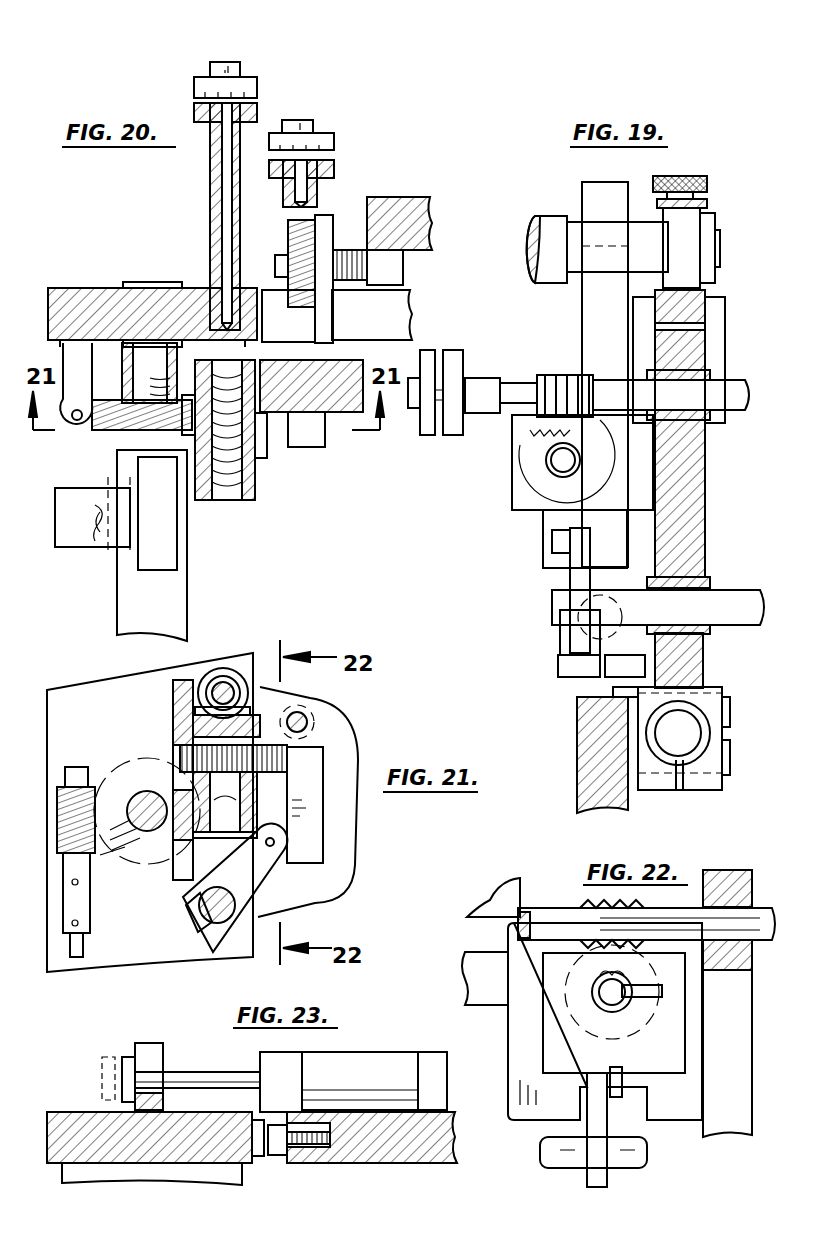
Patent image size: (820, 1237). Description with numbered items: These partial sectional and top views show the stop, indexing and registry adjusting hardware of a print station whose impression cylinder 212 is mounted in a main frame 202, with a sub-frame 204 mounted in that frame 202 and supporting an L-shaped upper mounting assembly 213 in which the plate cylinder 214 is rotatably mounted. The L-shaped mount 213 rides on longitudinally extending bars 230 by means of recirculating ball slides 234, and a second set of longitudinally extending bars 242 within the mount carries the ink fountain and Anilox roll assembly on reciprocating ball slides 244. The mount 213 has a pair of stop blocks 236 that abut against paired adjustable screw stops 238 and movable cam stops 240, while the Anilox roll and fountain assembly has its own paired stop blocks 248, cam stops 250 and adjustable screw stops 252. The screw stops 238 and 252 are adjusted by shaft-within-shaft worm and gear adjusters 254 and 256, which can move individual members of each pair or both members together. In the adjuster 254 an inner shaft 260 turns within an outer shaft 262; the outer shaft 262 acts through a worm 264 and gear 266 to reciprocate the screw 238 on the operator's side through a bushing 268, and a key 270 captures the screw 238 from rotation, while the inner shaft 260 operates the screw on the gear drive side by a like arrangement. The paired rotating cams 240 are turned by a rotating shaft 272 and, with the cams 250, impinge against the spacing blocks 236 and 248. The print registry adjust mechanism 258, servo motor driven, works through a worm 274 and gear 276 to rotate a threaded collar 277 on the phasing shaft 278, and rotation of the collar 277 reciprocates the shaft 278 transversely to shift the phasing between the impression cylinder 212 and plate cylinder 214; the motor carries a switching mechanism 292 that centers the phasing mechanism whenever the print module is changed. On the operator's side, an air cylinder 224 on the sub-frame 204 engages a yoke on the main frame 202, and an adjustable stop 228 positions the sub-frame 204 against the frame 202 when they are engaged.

In FIG. 20, the frame 202 is at (62, 296).
In FIG. 22, the frame 202 is at (746, 1018).
In FIG. 23, the frame 202 is at (60, 1118).
In FIG. 20, the sub-frame 204 is at (403, 316).
In FIG. 19, the sub-frame 204 is at (583, 725).
In FIG. 23, the sub-frame 204 is at (380, 1162).
In FIG. 22, the impression cylinder 212 is at (490, 919).
In FIG. 20, the L-shaped upper mounting assembly 213 is at (420, 216).
In FIG. 19, the L-shaped upper mounting assembly 213 is at (588, 186).
In FIG. 21, the L-shaped upper mounting assembly 213 is at (352, 870).
In FIG. 19, the plate cylinder 214 is at (541, 283).
In FIG. 23, the air cylinder 224 is at (380, 1062).
In FIG. 23, the adjustable stop 228 is at (262, 1160).
In FIG. 19, the longitudinally extending bars 230 is at (695, 731).
In FIG. 19, the recirculating ball slides 234 is at (697, 790).
In FIG. 20, the stop blocks 236 is at (312, 446).
In FIG. 21, the stop blocks 236 is at (318, 843).
In FIG. 20, the adjustable screw stops 238 is at (264, 447).
In FIG. 21, the adjustable screw stops 238 is at (270, 760).
In FIG. 22, the adjustable screw stops 238 is at (608, 996).
In FIG. 21, the movable cam stops 240 is at (262, 880).
In FIG. 22, the movable cam stops 240 is at (588, 1178).
In FIG. 19, the longitudinally extending bars 242 is at (582, 660).
In FIG. 19, the reciprocating ball slides 244 is at (575, 683).
In FIG. 20, the stop blocks 248 is at (400, 273).
In FIG. 19, the stop blocks 248 is at (553, 522).
In FIG. 19, the cam stops 250 is at (572, 560).
In FIG. 20, the adjustable screw stops 252 is at (345, 250).
In FIG. 19, the adjustable screw stops 252 is at (562, 461).
In FIG. 20, the shaft within a shaft worm and gear adjuster 254 is at (256, 72).
In FIG. 20, the shaft within a shaft worm and gear adjuster 256 is at (344, 138).
In FIG. 19, the shaft within a shaft worm and gear adjuster 256 is at (479, 422).
In FIG. 21, the shaft within a shaft worm and gear adjuster 256 is at (308, 722).
In FIG. 21, the print registry adjust mechanism 258 is at (108, 732).
In FIG. 20, the inner shaft 260 is at (222, 218).
In FIG. 22, the inner shaft 260 is at (525, 905).
In FIG. 20, the outer shaft 262 is at (210, 185).
In FIG. 22, the outer shaft 262 is at (760, 905).
In FIG. 21, the worm 264 is at (228, 668).
In FIG. 22, the worm 264 is at (585, 905).
In FIG. 20, the gear 266 is at (232, 468).
In FIG. 21, the gear 266 is at (175, 713).
In FIG. 22, the gear 266 is at (606, 952).
In FIG. 20, the bushing 268 is at (262, 463).
In FIG. 21, the bushing 268 is at (180, 736).
In FIG. 22, the key 270 is at (628, 1010).
In FIG. 21, the rotating shaft 272 is at (200, 904).
In FIG. 22, the rotating shaft 272 is at (647, 1160).
In FIG. 20, the worm 274 is at (73, 432).
In FIG. 21, the worm 274 is at (76, 768).
In FIG. 20, the gear 276 is at (115, 430).
In FIG. 21, the gear 276 is at (126, 850).
In FIG. 20, the threaded collar 277 is at (145, 358).
In FIG. 21, the threaded collar 277 is at (150, 785).
In FIG. 20, the phasing shaft 278 is at (186, 590).
In FIG. 20, the switching mechanism 292 is at (90, 554).